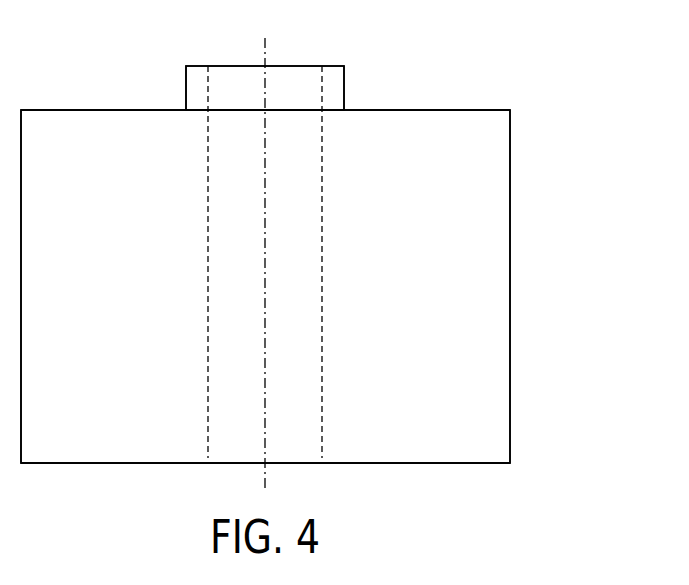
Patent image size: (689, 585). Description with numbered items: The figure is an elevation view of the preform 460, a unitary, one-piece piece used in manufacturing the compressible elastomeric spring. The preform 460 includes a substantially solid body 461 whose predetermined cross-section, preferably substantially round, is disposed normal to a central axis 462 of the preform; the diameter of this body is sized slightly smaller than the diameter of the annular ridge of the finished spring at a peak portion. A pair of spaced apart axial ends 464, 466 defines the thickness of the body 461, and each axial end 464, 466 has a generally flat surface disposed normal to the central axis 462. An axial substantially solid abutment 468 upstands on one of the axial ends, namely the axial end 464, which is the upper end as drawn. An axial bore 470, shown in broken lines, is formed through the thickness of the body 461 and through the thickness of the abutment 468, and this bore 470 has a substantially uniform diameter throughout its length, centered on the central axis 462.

The preform 460 is at (560, 248).
The substantially solid body 461 is at (480, 154).
The central axis 462 is at (267, 63).
The axial end 464 is at (470, 110).
The axial end 466 is at (470, 463).
The axial substantially solid abutment 468 is at (345, 80).
The axial bore 470 is at (208, 89).